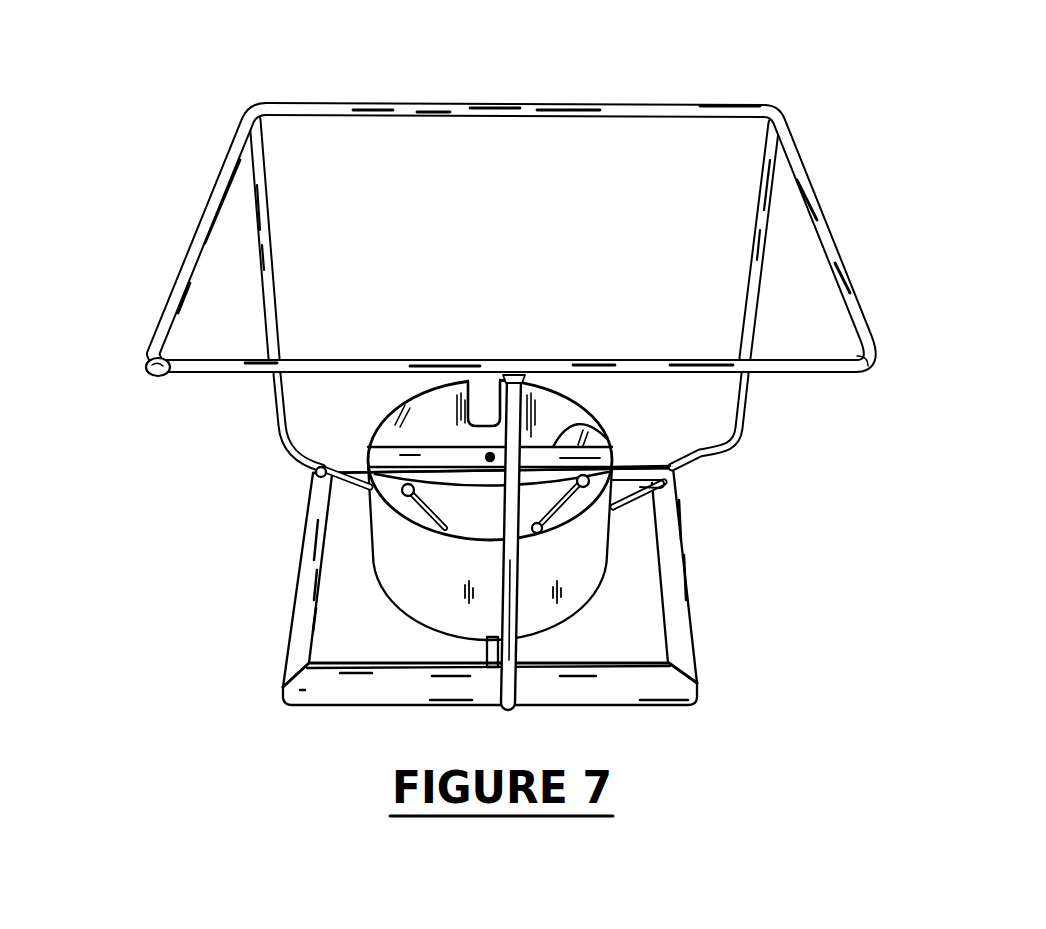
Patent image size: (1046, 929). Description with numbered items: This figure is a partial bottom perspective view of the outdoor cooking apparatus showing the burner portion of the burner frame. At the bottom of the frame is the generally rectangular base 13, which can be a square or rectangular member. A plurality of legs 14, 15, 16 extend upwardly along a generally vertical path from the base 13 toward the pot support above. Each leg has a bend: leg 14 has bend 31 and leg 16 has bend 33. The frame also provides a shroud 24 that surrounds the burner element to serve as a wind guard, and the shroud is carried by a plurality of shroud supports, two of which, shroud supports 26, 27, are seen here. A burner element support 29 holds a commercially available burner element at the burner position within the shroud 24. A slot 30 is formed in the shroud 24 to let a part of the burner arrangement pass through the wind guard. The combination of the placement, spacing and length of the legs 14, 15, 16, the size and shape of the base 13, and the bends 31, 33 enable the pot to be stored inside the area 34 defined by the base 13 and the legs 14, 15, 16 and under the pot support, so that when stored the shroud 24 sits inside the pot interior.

The base 13 is at (158, 325).
The leg 14 is at (278, 293).
The leg 15 is at (510, 618).
The leg 16 is at (755, 258).
The shroud 24 is at (440, 602).
The shroud support 26 is at (597, 552).
The shroud support 27 is at (447, 522).
The burner element support 29 is at (590, 423).
The slot 30 is at (488, 398).
The bend 31 is at (290, 450).
The bend 33 is at (733, 447).
The area 34 is at (567, 170).